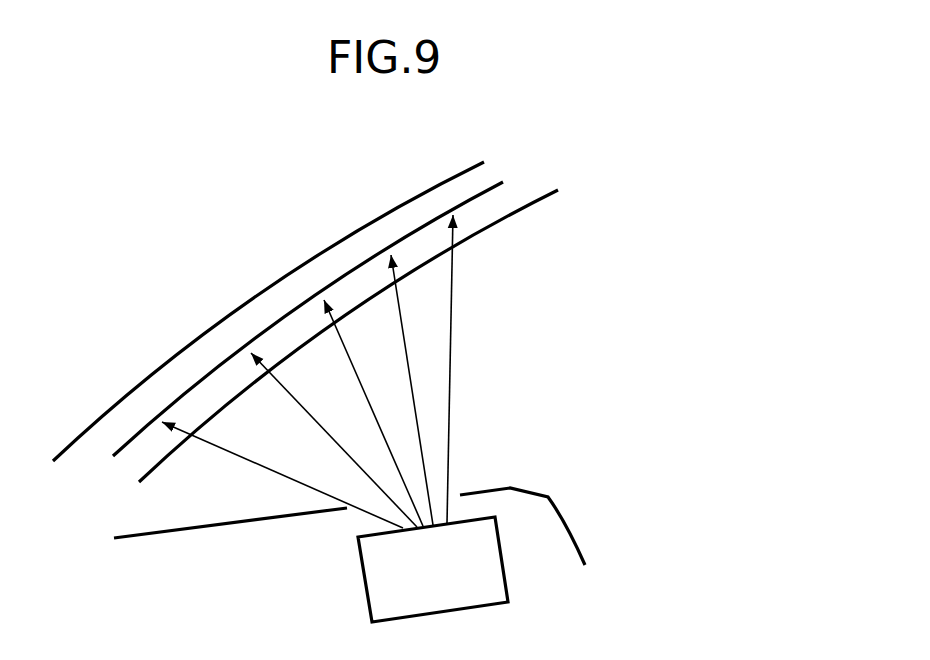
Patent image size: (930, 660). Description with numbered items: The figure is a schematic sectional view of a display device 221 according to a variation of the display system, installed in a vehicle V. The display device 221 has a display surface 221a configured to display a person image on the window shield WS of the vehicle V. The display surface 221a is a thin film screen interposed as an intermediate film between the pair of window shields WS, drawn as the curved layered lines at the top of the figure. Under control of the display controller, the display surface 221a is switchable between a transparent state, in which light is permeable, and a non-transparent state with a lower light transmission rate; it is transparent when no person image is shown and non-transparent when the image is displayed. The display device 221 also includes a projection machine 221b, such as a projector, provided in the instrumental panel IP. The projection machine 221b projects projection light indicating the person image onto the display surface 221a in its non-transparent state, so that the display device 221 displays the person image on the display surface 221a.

The window shield WS is at (500, 218).
The vehicle V is at (112, 278).
The display device 221 is at (406, 402).
The display surface 221a is at (281, 312).
The projection machine 221b is at (508, 559).
The instrumental panel IP is at (530, 492).